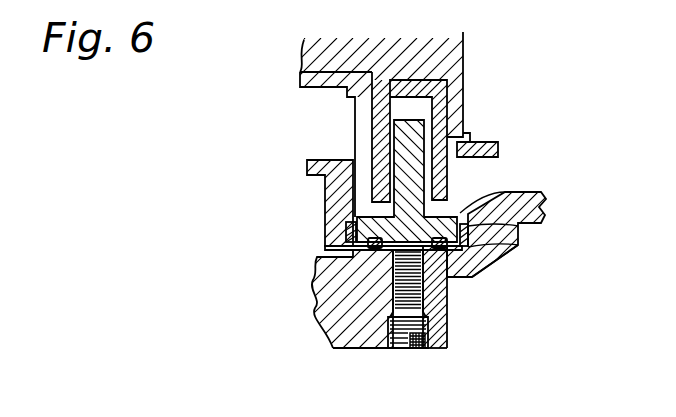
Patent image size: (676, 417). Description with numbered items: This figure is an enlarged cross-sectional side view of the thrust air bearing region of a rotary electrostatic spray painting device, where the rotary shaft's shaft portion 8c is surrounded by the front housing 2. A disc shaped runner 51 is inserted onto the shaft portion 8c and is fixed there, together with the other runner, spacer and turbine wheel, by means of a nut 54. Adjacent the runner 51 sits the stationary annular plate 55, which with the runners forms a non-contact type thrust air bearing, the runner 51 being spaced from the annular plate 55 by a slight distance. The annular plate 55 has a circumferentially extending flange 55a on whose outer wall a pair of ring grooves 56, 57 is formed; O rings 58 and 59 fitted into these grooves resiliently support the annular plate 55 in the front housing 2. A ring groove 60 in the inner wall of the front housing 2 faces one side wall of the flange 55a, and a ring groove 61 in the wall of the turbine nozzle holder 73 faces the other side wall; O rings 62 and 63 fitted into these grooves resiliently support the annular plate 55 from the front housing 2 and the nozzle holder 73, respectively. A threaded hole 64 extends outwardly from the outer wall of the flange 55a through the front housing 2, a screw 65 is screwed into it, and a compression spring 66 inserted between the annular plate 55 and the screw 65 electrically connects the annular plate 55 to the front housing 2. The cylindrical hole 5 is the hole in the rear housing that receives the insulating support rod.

The nut 54 is at (320, 68).
The shaft portion 8c is at (460, 54).
The runner 51 is at (376, 128).
The stationary annular plate 55 is at (457, 118).
The cylindrical hole 5 is at (448, 182).
The flange 55a is at (461, 213).
The turbine nozzle holder 73 is at (330, 186).
The O ring 63 is at (345, 225).
The ring groove 61 is at (326, 249).
The O ring 62 is at (518, 227).
The ring groove 60 is at (495, 243).
The ring groove 56 is at (483, 258).
The front housing 2 is at (485, 269).
The ring groove 57 is at (316, 266).
The O ring 58 is at (440, 296).
The O ring 59 is at (333, 308).
The threaded hole 64 is at (337, 351).
The screw 65 is at (417, 350).
The compression spring 66 is at (440, 350).